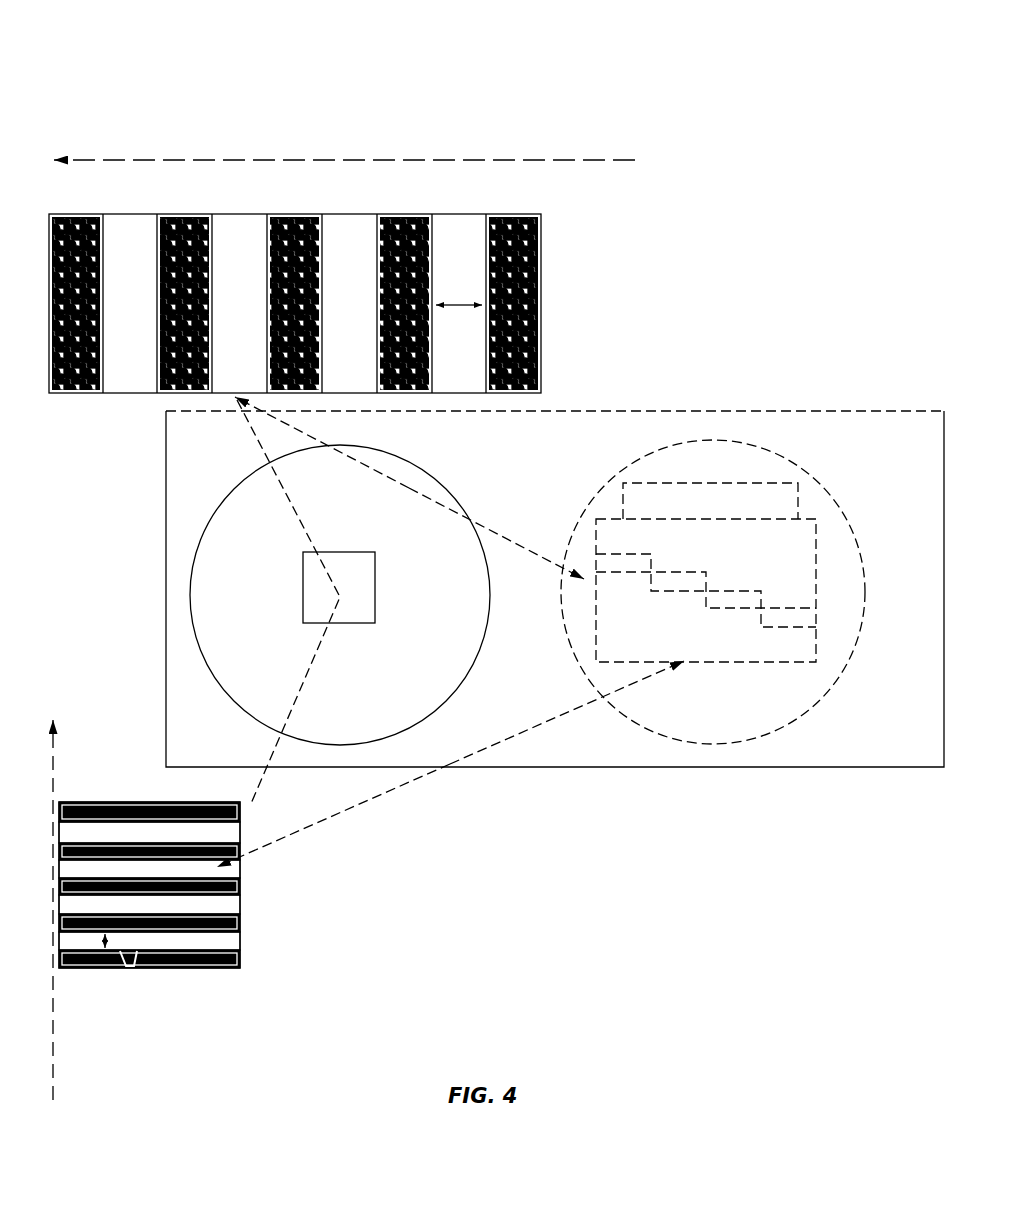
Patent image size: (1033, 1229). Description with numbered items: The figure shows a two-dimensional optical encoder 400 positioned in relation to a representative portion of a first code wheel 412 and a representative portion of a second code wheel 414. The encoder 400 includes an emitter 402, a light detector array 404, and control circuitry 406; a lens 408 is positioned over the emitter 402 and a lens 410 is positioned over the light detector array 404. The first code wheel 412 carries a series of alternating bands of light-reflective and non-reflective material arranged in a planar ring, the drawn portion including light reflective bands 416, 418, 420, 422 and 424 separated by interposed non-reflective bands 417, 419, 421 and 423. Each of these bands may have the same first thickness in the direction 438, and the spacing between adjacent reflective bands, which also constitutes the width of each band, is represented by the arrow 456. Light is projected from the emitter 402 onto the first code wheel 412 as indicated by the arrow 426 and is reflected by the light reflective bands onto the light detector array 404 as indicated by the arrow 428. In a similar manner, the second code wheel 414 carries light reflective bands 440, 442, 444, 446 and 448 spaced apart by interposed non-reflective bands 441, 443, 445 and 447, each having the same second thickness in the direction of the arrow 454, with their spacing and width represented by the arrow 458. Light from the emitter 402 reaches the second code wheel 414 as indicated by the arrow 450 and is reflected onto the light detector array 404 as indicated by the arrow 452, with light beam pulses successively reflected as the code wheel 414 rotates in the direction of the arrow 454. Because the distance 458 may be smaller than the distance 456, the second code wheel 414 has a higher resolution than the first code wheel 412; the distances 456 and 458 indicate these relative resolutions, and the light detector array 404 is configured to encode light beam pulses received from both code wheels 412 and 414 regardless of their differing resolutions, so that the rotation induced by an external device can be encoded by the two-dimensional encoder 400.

The two-dimensional optical encoder 400 is at (808, 362).
The emitter 402 is at (382, 569).
The light detector array 404 is at (797, 563).
The control circuitry 406 is at (734, 515).
The lens 408 is at (188, 552).
The lens 410 is at (800, 464).
The first code wheel 412 is at (387, 200).
The second code wheel 414 is at (349, 914).
The light reflective band 416 is at (78, 207).
The non-reflective band 417 is at (132, 207).
The light reflective band 418 is at (187, 207).
The non-reflective band 419 is at (243, 207).
The light reflective band 420 is at (297, 207).
The non-reflective band 421 is at (352, 207).
The light reflective band 422 is at (408, 207).
The non-reflective band 423 is at (462, 207).
The light reflective band 424 is at (517, 207).
The arrow 426 is at (258, 450).
The arrow 428 is at (407, 476).
The direction 438 is at (580, 170).
The light reflective band 440 is at (250, 809).
The non-reflective band 441 is at (250, 830).
The light reflective band 442 is at (250, 852).
The non-reflective band 443 is at (250, 871).
The light reflective band 444 is at (250, 888).
The non-reflective band 445 is at (250, 908).
The light reflective band 446 is at (250, 927).
The non-reflective band 447 is at (250, 945).
The light reflective band 448 is at (250, 963).
The arrow 450 is at (310, 678).
The arrow 452 is at (576, 728).
The arrow 454 is at (57, 1045).
The arrow 456 is at (459, 310).
The arrow 458 is at (119, 943).